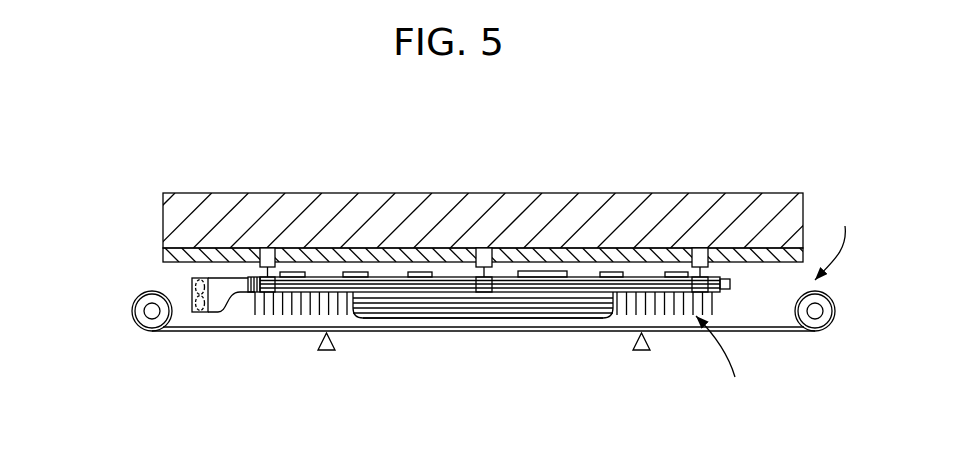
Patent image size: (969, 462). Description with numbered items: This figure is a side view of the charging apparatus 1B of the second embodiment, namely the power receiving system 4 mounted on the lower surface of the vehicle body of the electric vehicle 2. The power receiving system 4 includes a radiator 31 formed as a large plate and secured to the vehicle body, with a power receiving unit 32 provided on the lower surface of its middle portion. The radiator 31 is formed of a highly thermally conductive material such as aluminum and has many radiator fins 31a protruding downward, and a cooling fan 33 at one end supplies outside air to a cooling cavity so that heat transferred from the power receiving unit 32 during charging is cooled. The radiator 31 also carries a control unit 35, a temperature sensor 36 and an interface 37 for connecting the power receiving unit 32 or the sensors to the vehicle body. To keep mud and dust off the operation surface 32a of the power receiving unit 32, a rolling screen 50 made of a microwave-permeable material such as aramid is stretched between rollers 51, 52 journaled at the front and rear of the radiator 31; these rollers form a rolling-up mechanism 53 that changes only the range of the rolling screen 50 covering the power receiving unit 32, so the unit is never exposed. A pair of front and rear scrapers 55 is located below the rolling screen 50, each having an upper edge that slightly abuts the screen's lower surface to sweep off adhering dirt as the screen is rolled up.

The charging apparatus 1B is at (133, 205).
The electric vehicle 2 is at (163, 205).
The power receiving system 4 is at (724, 355).
The radiator 31 is at (640, 277).
The radiator fins 31a is at (713, 303).
The power receiving unit 32 is at (436, 325).
The operation surface 32a is at (537, 320).
The cooling fan 33 is at (192, 292).
The control unit 35 is at (545, 271).
The temperature sensor 36 is at (420, 271).
The interface 37 is at (267, 248).
The rolling screen 50 is at (257, 332).
The roller 51 is at (152, 312).
The roller 52 is at (815, 312).
The rolling-up mechanism 53 is at (840, 239).
The scraper 55 is at (326, 350).